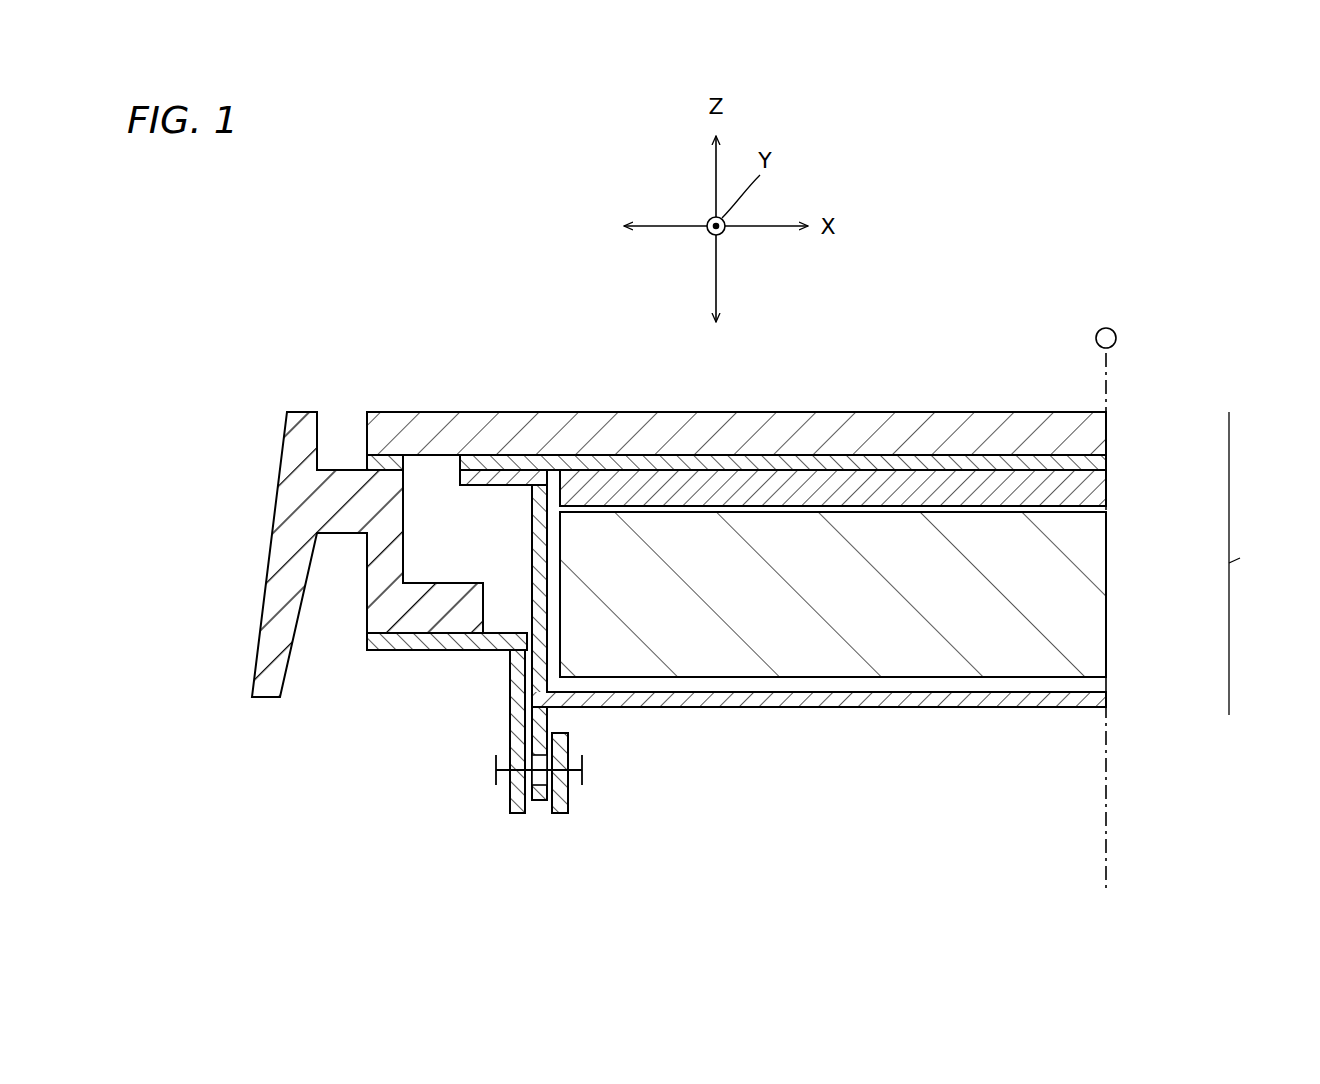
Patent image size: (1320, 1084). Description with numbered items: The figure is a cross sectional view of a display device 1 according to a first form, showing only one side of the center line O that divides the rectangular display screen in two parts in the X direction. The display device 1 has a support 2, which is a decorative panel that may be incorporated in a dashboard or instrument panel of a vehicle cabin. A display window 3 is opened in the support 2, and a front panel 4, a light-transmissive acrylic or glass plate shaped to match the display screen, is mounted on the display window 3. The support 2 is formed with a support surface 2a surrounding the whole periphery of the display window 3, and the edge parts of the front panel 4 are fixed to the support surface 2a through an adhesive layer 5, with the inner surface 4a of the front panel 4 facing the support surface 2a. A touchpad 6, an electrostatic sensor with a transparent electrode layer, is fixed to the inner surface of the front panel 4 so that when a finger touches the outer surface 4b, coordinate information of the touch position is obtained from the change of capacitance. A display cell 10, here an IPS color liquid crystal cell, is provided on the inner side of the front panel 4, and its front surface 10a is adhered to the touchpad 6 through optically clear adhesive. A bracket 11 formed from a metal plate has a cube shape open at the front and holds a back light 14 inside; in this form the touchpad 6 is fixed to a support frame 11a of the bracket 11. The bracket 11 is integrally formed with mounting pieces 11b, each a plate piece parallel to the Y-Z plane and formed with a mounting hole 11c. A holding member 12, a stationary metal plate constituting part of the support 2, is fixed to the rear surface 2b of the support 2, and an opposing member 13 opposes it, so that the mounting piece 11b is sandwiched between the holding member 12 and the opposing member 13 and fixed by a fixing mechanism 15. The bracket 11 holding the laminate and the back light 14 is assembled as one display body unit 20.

The display device 1 is at (1166, 354).
The support 2 is at (290, 497).
The support surface 2a is at (343, 466).
The rear surface 2b is at (397, 617).
The display window 3 is at (426, 488).
The front panel 4 is at (937, 428).
The inner surface 4a is at (633, 454).
The outer surface 4b is at (563, 410).
The adhesive layer 5 is at (380, 466).
The touchpad 6 is at (1106, 462).
The display cell 10 is at (1088, 492).
The front surface 10a is at (800, 468).
The bracket 11 is at (836, 707).
The support frame 11a is at (498, 484).
The mounting piece 11b is at (548, 720).
The mounting hole 11c is at (517, 783).
The holding member 12 is at (457, 651).
The opposing member 13 is at (568, 797).
The back light 14 is at (1092, 600).
The fixing mechanism 15 is at (478, 777).
The display body unit 20 is at (1251, 563).